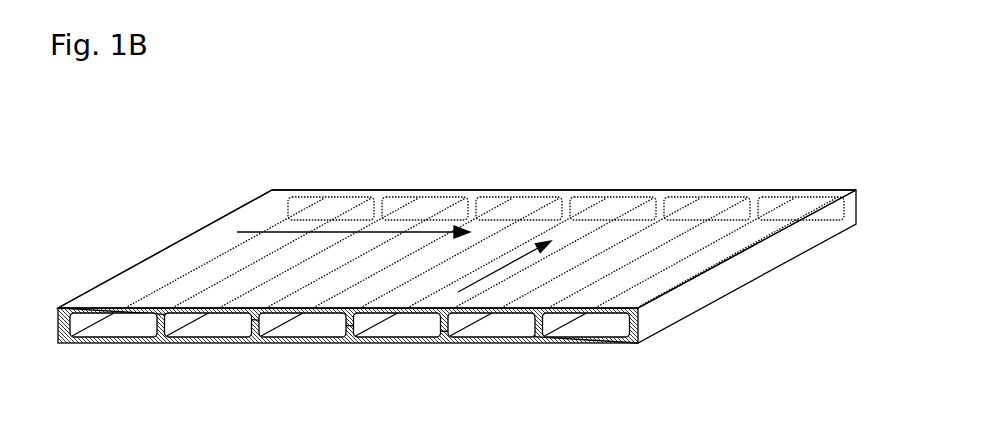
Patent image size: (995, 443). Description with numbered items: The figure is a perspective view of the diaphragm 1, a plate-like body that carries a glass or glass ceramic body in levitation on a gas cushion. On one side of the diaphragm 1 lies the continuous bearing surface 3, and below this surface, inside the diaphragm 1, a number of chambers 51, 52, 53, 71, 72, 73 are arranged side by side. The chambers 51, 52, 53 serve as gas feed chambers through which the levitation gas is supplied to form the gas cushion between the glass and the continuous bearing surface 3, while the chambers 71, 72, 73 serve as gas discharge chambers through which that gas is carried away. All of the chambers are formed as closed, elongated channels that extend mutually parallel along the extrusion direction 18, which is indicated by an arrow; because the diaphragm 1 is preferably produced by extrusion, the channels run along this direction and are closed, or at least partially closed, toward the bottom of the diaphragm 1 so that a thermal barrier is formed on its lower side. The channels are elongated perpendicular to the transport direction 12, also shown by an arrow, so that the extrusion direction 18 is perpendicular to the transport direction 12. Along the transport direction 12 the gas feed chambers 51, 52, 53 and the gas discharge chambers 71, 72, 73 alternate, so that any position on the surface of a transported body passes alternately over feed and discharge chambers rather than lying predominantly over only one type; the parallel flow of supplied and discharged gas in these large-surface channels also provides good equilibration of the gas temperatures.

The diaphragm 1 is at (457, 268).
The continuous bearing surface 3 is at (151, 269).
The transport direction 12 is at (290, 232).
The extrusion direction 18 is at (518, 258).
The gas feed chamber 51 is at (108, 338).
The gas feed chamber 52 is at (297, 338).
The gas feed chamber 53 is at (474, 338).
The gas discharge chamber 71 is at (203, 338).
The gas discharge chamber 72 is at (391, 338).
The gas discharge chamber 73 is at (569, 338).